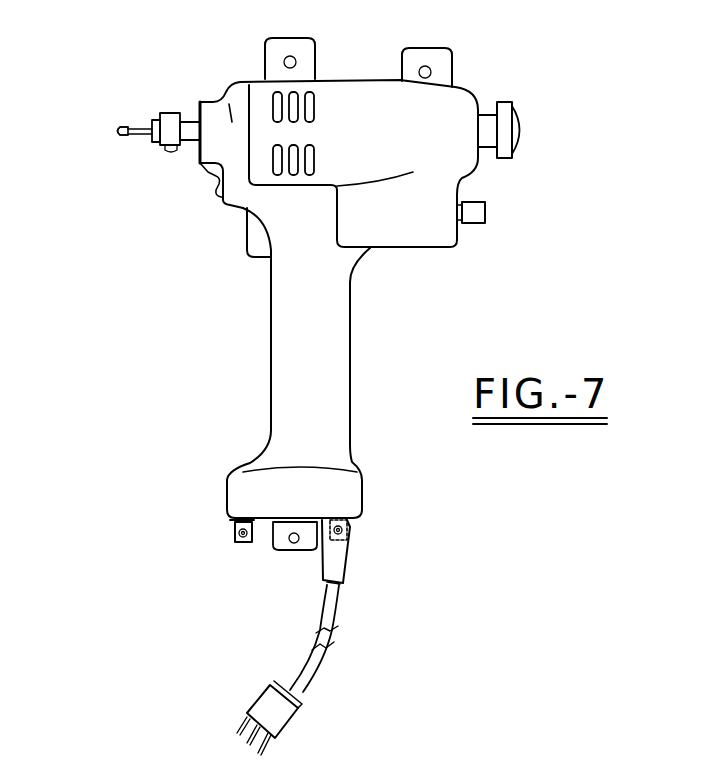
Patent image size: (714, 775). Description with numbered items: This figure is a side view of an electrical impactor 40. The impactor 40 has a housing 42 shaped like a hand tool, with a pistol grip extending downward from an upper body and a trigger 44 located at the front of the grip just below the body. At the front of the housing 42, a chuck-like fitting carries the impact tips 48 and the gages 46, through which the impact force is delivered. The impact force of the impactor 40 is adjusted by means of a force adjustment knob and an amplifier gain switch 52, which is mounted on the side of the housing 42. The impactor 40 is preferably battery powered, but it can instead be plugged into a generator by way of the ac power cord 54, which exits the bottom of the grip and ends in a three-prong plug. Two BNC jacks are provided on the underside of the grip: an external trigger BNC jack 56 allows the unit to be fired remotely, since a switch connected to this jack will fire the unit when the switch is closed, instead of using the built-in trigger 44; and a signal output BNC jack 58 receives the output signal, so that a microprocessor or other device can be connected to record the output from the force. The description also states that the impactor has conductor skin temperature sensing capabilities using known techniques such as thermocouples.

The impactor 40 is at (152, 281).
The housing 42 is at (418, 233).
The trigger 44 is at (240, 233).
The gages 46 is at (125, 138).
The impact tips 48 is at (118, 131).
The amplifier gain switch 52 is at (488, 212).
The ac power cord 54 is at (307, 686).
The external trigger BNC jack 56 is at (237, 538).
The signal output BNC jack 58 is at (360, 546).